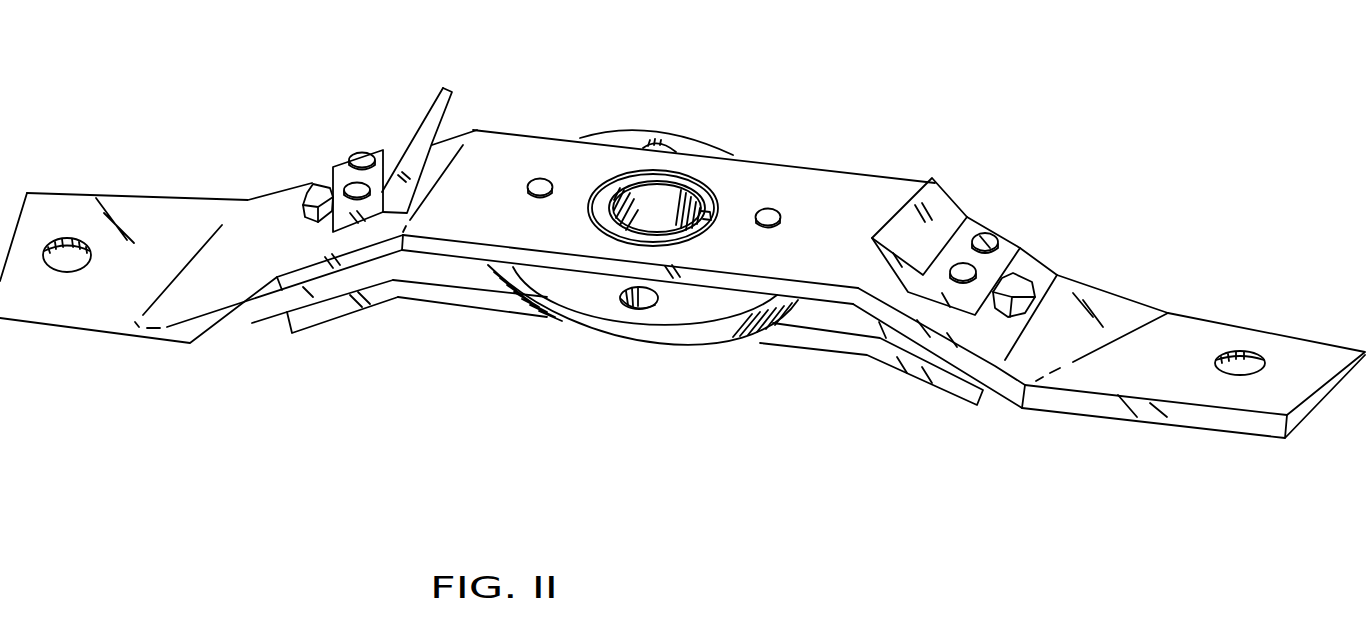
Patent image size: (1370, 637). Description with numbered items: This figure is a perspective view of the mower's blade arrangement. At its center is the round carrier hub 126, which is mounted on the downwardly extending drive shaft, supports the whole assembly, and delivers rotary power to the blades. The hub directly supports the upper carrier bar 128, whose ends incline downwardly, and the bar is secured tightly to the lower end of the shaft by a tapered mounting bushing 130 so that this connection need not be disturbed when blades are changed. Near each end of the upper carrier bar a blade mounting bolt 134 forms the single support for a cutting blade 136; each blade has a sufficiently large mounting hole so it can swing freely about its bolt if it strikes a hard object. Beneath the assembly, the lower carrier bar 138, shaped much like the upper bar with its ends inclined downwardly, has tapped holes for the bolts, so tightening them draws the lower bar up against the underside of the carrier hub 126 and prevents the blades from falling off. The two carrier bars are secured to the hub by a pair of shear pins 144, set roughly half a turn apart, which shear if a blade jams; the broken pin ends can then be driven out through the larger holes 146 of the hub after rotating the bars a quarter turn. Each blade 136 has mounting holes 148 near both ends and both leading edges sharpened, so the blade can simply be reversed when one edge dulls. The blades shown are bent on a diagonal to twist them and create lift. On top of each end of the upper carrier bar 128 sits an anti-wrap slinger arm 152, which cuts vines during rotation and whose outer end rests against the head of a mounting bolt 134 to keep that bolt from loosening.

The carrier hub 126 is at (577, 313).
The upper carrier bar 128 is at (870, 182).
The tapered mounting bushing 130 is at (687, 185).
The blade mounting bolt 134 is at (320, 197).
The cutting blade 136 is at (198, 207).
The lower carrier bar 138 is at (423, 293).
The shear pin 144 is at (541, 178).
The larger hole 146 is at (667, 137).
The mounting hole 148 is at (62, 242).
The anti-wrap slinger arm 152 is at (447, 88).